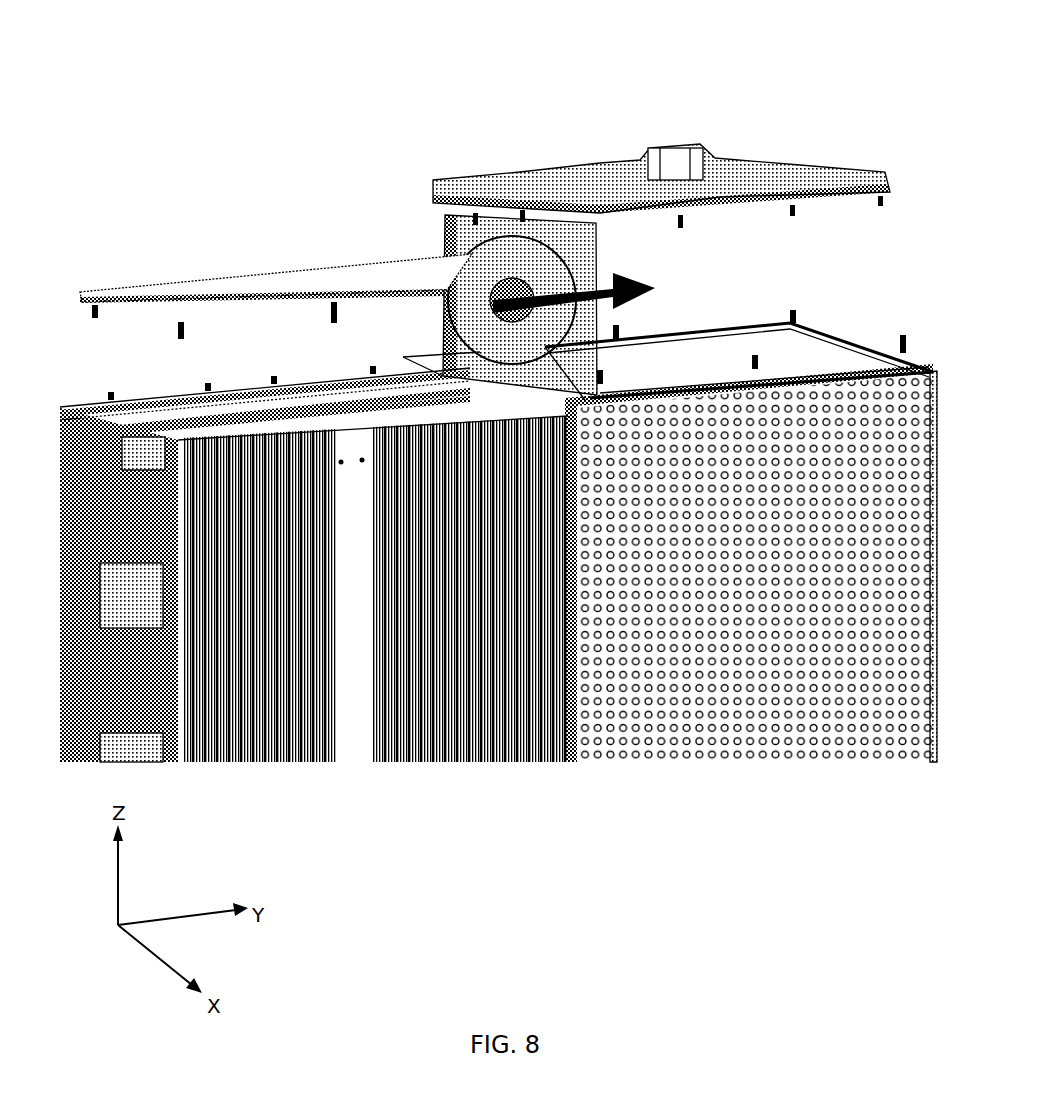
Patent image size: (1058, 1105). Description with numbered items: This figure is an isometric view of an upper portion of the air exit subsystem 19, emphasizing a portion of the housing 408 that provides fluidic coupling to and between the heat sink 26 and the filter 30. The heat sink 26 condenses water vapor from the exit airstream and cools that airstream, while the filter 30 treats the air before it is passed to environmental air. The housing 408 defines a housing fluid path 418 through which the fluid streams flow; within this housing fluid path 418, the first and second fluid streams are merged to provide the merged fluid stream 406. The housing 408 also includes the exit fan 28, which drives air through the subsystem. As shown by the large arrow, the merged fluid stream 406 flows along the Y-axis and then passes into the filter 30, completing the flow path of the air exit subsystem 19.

The air exit subsystem 19 is at (608, 66).
The heat sink 26 is at (347, 730).
The exit fan 28 is at (528, 283).
The filter 30 is at (648, 692).
The merged fluid stream 406 is at (597, 283).
The housing 408 is at (212, 296).
The housing fluid path 418 is at (420, 318).